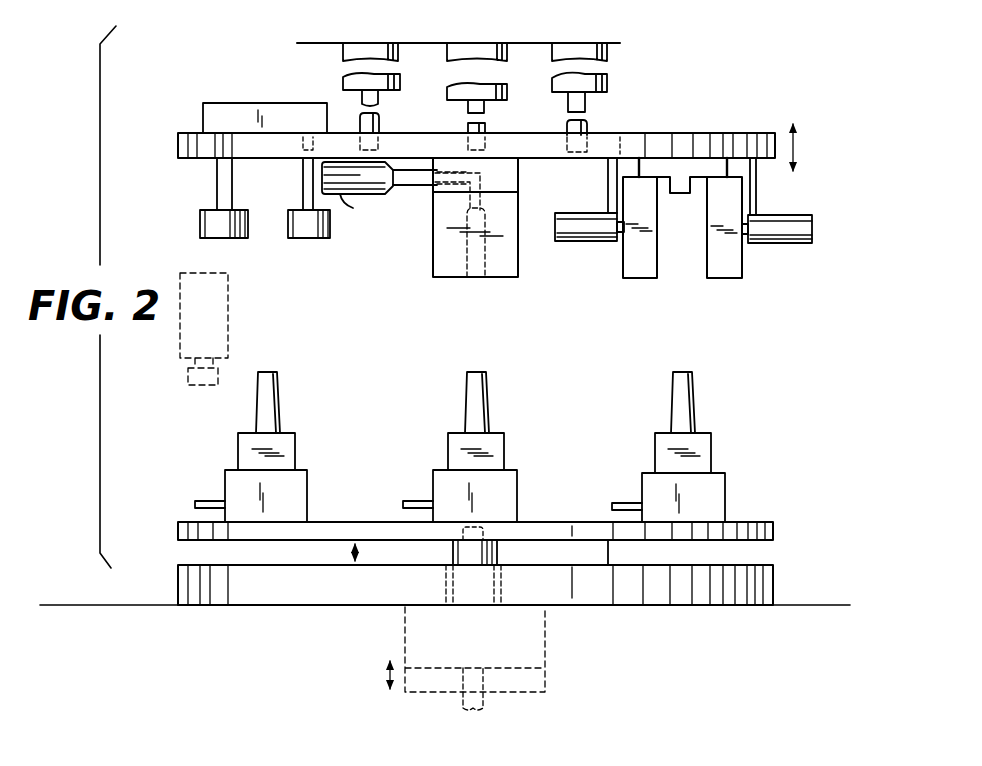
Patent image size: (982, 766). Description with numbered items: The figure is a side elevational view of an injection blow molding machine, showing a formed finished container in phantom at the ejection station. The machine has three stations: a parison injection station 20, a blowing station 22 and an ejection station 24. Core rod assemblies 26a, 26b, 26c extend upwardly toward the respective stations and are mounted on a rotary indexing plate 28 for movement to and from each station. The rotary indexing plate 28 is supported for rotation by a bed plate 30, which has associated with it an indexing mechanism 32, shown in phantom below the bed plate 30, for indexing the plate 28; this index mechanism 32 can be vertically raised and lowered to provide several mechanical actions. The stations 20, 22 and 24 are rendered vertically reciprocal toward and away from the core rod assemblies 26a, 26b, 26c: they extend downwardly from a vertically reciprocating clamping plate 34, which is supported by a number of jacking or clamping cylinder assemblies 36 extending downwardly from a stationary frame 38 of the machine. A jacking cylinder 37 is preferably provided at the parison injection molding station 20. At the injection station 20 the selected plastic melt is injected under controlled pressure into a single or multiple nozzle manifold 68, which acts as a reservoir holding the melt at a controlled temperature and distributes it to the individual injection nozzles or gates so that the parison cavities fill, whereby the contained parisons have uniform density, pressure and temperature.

The parison injection station 20 is at (530, 253).
The blowing station 22 is at (681, 285).
The ejection station 24 is at (259, 241).
The core rod assembly 26a is at (493, 409).
The core rod assembly 26b is at (713, 408).
The core rod assembly 26c is at (285, 410).
The rotary indexing plate 28 is at (548, 525).
The bed plate 30 is at (583, 600).
The indexing mechanism 32 is at (401, 632).
The clamping plate 34 is at (748, 97).
The clamping cylinder assembly 36 is at (392, 98).
The jacking cylinder 37 is at (521, 18).
The stationary frame 38 is at (619, 43).
The nozzle manifold 68 is at (370, 195).